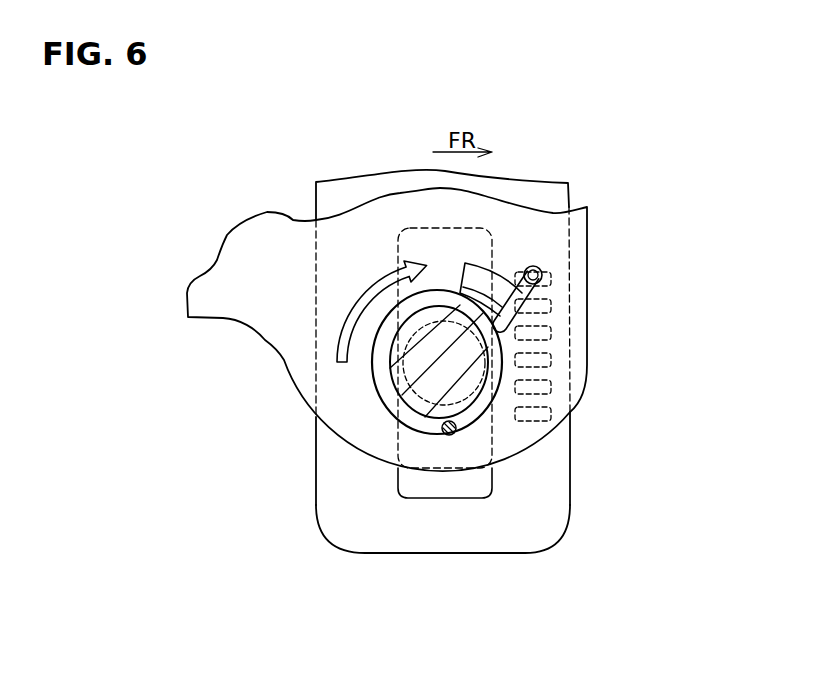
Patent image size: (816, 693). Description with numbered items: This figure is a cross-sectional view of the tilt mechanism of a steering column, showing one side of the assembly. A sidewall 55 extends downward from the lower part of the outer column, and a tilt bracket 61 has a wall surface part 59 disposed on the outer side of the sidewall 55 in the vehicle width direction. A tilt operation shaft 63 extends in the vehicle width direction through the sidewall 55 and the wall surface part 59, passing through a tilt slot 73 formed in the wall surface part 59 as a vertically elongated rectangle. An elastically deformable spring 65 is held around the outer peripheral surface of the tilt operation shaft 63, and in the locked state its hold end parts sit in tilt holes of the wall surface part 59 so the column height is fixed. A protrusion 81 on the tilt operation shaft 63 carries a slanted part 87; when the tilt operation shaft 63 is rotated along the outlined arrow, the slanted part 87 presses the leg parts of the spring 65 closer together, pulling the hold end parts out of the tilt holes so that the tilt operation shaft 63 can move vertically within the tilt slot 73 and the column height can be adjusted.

The sidewall 55 is at (278, 307).
The wall surface part 59 is at (382, 530).
The tilt bracket 61 is at (394, 390).
The tilt operation shaft 63 is at (458, 373).
The spring 65 is at (383, 396).
The tilt slot 73 is at (445, 490).
The protrusion 81 is at (540, 292).
The slanted part 87 is at (575, 297).